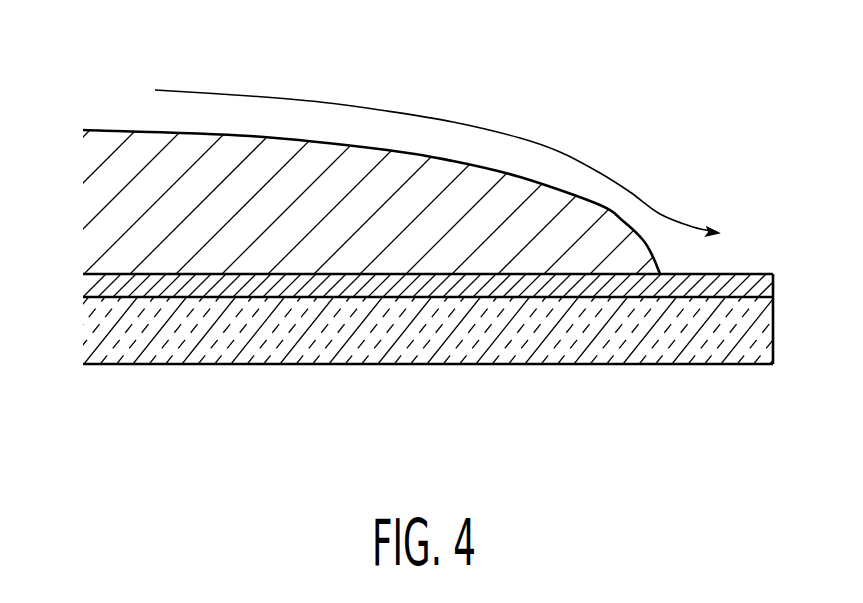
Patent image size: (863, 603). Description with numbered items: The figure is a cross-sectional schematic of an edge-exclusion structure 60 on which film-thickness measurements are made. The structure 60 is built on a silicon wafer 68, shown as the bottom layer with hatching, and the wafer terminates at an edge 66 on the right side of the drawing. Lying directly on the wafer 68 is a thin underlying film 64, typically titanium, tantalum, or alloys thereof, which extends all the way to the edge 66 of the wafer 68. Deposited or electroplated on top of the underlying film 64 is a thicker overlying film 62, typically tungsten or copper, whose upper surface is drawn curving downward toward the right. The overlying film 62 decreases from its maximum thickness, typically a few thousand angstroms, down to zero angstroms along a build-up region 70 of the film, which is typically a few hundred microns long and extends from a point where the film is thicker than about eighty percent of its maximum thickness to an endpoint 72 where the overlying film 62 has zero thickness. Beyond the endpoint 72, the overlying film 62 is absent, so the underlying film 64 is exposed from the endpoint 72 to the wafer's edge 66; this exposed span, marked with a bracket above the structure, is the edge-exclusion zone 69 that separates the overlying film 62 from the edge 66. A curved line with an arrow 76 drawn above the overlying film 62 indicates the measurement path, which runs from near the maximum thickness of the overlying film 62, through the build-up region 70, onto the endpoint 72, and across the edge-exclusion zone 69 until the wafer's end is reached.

The edge-exclusion structure 60 is at (63, 128).
The overlying film 62 is at (102, 128).
The underlying film 64 is at (765, 287).
The edge 66 is at (782, 308).
The silicon wafer 68 is at (287, 363).
The edge-exclusion zone 69 is at (768, 168).
The build-up region 70 is at (573, 112).
The endpoint 72 is at (660, 273).
The flow path over layer 76 is at (288, 98).